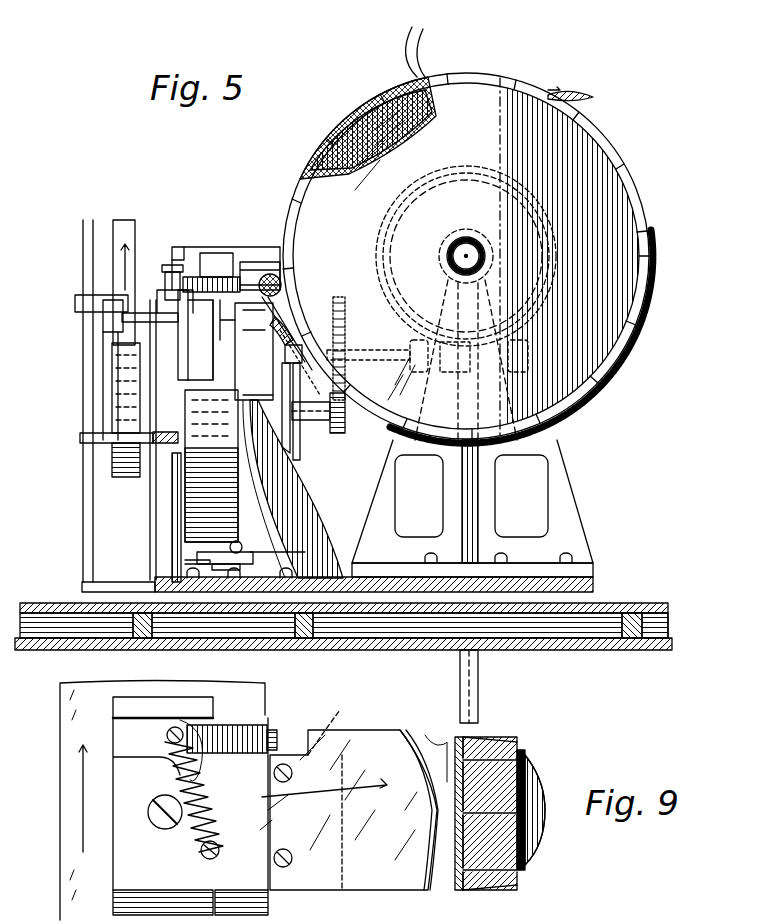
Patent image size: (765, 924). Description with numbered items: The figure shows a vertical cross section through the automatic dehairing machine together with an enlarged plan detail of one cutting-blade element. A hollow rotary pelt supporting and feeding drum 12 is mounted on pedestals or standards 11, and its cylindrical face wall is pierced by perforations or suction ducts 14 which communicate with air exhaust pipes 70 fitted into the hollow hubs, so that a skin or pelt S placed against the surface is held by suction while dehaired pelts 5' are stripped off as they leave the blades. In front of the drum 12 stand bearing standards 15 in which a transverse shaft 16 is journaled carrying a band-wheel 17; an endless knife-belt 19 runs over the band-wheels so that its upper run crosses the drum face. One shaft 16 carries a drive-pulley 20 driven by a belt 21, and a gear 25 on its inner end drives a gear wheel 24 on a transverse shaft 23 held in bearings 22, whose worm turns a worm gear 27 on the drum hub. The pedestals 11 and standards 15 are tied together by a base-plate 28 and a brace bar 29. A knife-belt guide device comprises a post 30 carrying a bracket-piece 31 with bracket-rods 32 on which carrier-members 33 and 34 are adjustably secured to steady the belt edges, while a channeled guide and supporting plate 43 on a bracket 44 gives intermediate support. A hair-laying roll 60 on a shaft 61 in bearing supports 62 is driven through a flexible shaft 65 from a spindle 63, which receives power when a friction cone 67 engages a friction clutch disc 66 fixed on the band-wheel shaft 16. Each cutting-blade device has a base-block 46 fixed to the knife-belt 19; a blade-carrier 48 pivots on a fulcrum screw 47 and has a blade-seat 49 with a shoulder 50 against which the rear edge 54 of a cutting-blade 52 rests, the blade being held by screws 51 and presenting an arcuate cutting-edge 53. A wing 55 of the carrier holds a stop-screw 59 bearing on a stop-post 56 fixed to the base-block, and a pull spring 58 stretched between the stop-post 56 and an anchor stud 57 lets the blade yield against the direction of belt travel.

In FIG. 5, the pedestals or standards 11 is at (488, 481).
In FIG. 5, the drum 12 is at (481, 76).
In FIG. 9, the drum 12 is at (506, 763).
In FIG. 5, the perforations or suction ducts 14 is at (415, 48).
In FIG. 9, the perforations or suction ducts 14 is at (498, 747).
In FIG. 5, the bearing standards 15 is at (302, 487).
In FIG. 5, the transverse shaft 16 is at (108, 395).
In FIG. 5, the band-wheel 17 is at (228, 503).
In FIG. 5, the knife-belt 19 is at (186, 248).
In FIG. 9, the knife-belt 19 is at (59, 742).
In FIG. 5, the drive-pulley 20 is at (105, 355).
In FIG. 5, the belt 21 is at (112, 254).
In FIG. 5, the bearings 22 is at (410, 342).
In FIG. 5, the transverse shaft 23 is at (368, 353).
In FIG. 5, the gear wheel 24 is at (347, 322).
In FIG. 5, the gear 25 is at (343, 422).
In FIG. 5, the worm gear 27 is at (442, 176).
In FIG. 5, the base-plate 28 is at (128, 588).
In FIG. 5, the brace bar 29 is at (160, 462).
In FIG. 5, the standard or post 30 is at (84, 520).
In FIG. 5, the bracket-piece 31 is at (107, 318).
In FIG. 5, the bracket-rods 32 is at (158, 310).
In FIG. 5, the carrier-member 33 is at (166, 274).
In FIG. 5, the carrier-member 34 is at (242, 352).
In FIG. 5, the guide and supporting plate 43 is at (197, 320).
In FIG. 5, the bracket 44 is at (217, 330).
In FIG. 5, the base-block 46 is at (210, 252).
In FIG. 9, the base-block 46 is at (114, 726).
In FIG. 9, the pivot or fulcrum screw 47 is at (148, 812).
In FIG. 5, the blade-carrier 48 is at (233, 252).
In FIG. 9, the blade-carrier 48 is at (112, 862).
In FIG. 9, the blade-seat 49 is at (340, 710).
In FIG. 9, the shoulder or abutment 50 is at (255, 780).
In FIG. 9, the screws 51 is at (292, 775).
In FIG. 5, the cutting-blade 52 is at (260, 242).
In FIG. 9, the cutting-blade 52 is at (360, 885).
In FIG. 9, the cutting-edge 53 is at (420, 723).
In FIG. 9, the back or rear edge 54 is at (276, 825).
In FIG. 9, the lateral extension or wing 55 is at (250, 724).
In FIG. 9, the stop-post 56 is at (188, 700).
In FIG. 9, the anchor stud or screw 57 is at (202, 853).
In FIG. 9, the pull spring 58 is at (202, 792).
In FIG. 9, the stop-screw 59 is at (170, 739).
In FIG. 5, the hair-laying element or roll 60 is at (270, 272).
In FIG. 5, the shaft 61 is at (290, 268).
In FIG. 5, the bearing supports 62 is at (292, 308).
In FIG. 5, the spindle 63 is at (282, 325).
In FIG. 5, the flexible shaft 65 is at (294, 287).
In FIG. 5, the friction clutch disc 66 is at (290, 423).
In FIG. 5, the friction cone 67 is at (313, 365).
In FIG. 5, the air exhaust pipes 70 is at (472, 243).
In FIG. 9, the air exhaust pipes 70 is at (479, 668).
In FIG. 5, the skin or pelt S is at (421, 427).
In FIG. 5, the dehaired skins or pelts 5' is at (365, 128).